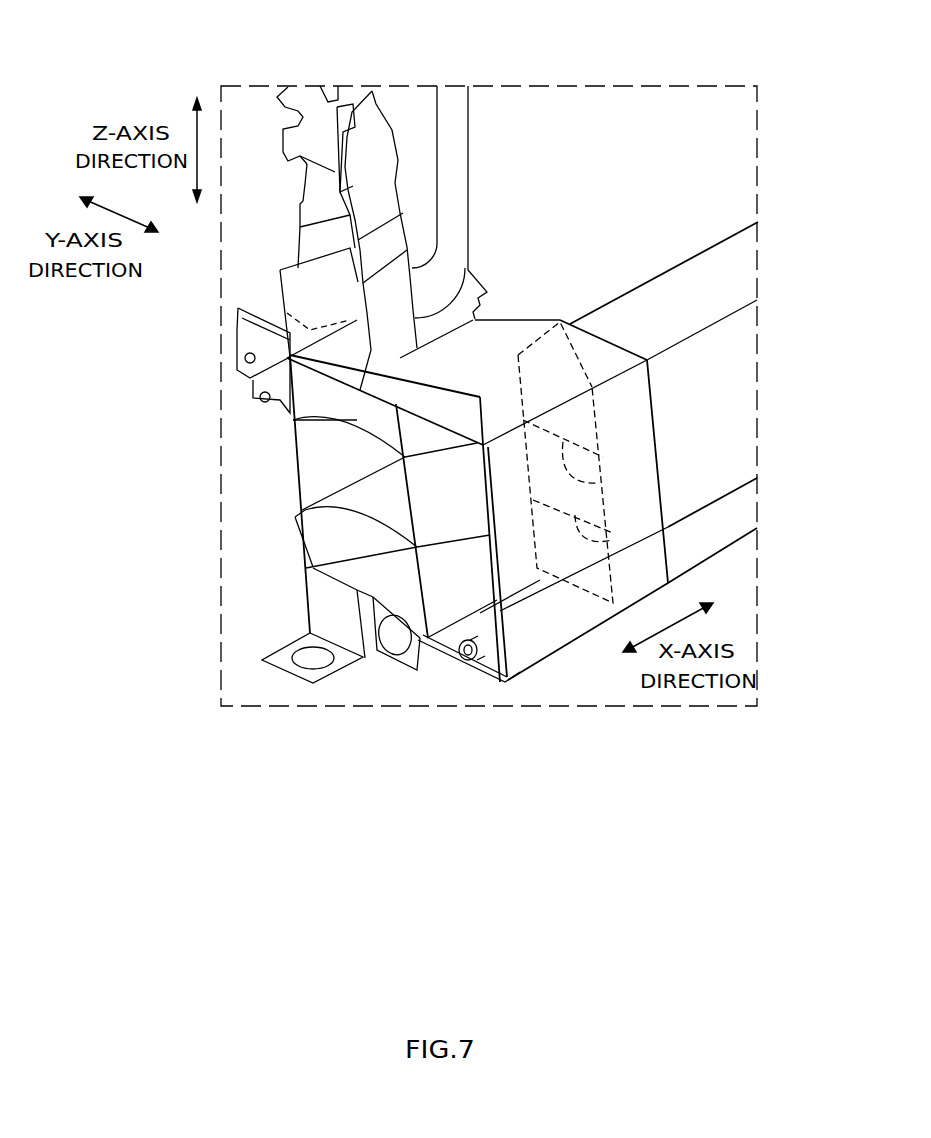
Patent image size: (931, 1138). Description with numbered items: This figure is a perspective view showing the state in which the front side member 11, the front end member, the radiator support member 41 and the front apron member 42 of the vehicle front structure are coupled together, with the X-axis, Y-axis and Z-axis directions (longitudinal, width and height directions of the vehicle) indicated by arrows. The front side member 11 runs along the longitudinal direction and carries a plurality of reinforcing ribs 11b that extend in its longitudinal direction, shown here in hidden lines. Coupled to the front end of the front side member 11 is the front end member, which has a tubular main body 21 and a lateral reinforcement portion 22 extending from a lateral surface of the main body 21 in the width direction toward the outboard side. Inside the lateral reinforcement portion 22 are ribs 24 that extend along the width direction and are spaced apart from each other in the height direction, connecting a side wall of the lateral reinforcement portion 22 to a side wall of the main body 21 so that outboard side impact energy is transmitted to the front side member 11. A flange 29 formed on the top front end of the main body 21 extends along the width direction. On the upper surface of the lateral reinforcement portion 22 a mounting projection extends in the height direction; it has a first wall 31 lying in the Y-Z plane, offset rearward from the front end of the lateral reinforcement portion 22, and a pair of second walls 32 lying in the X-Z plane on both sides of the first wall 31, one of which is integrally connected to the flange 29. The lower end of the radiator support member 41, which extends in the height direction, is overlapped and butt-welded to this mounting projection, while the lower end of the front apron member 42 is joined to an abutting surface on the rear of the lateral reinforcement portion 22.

The front side member 11 is at (735, 392).
The reinforcing ribs 11b is at (603, 540).
The main body 21 is at (453, 680).
The lateral reinforcement portion 22 is at (203, 543).
The ribs 24 is at (328, 427).
The flange 29 is at (293, 420).
The first wall 31 is at (323, 262).
The second walls 32 is at (300, 295).
The radiator support member 41 is at (372, 154).
The front apron member 42 is at (463, 112).